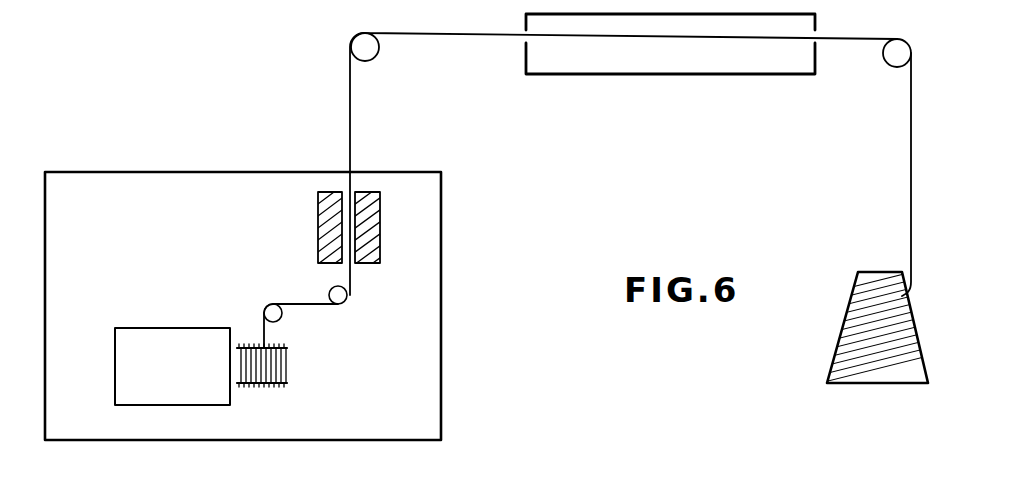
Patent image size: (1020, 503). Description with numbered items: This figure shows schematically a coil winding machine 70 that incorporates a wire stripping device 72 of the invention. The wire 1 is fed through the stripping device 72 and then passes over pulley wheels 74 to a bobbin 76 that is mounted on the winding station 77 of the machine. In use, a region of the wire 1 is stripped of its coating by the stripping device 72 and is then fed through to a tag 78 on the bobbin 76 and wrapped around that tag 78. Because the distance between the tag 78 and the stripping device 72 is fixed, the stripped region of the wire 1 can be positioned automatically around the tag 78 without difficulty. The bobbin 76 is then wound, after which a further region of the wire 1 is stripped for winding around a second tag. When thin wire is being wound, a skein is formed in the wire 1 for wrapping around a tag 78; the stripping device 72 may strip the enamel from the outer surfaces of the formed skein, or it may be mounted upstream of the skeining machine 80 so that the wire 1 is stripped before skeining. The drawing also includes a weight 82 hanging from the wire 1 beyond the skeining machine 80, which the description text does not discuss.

The wire 1 is at (350, 115).
The coil winding machine 70 is at (441, 337).
The wire stripping device 72 is at (392, 223).
The pulley wheels 74 is at (271, 304).
The bobbin 76 is at (262, 385).
The winding station 77 is at (173, 346).
The tag 78 is at (288, 381).
The skeining machine 80 is at (661, 75).
The weight 82 is at (880, 324).